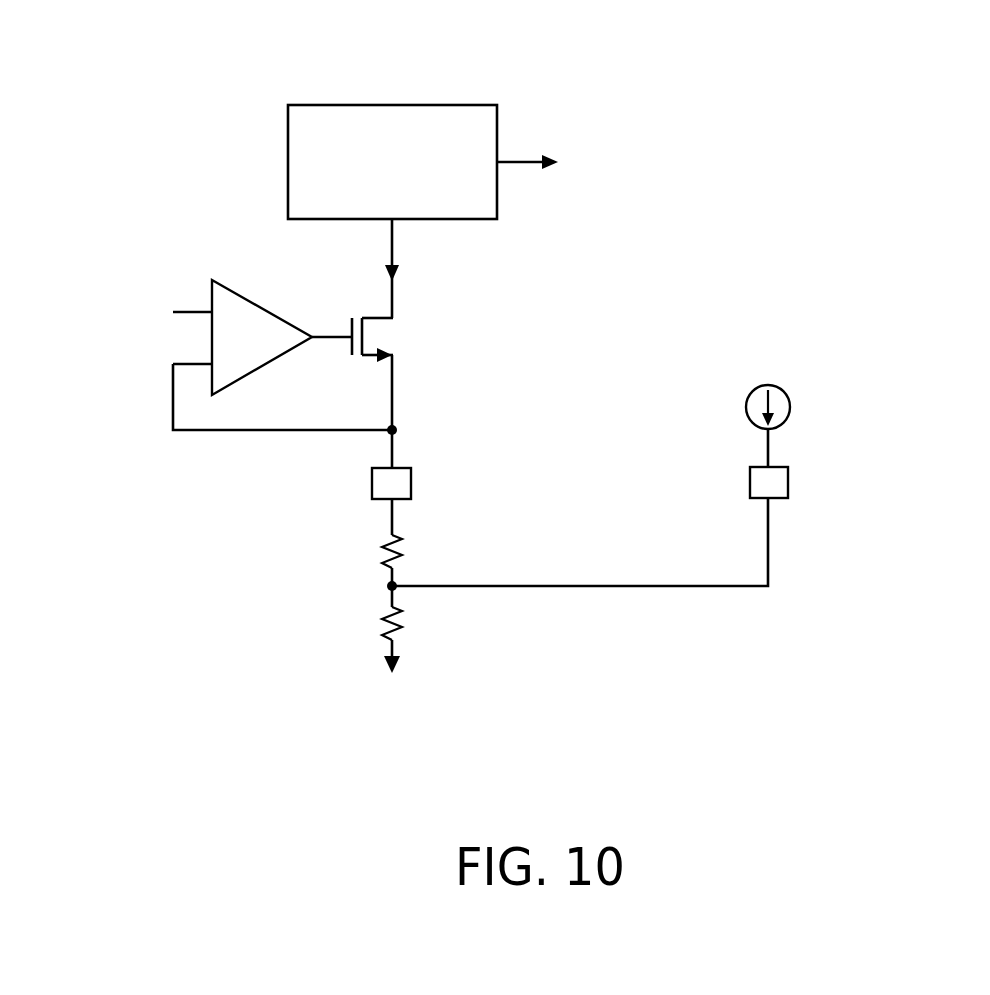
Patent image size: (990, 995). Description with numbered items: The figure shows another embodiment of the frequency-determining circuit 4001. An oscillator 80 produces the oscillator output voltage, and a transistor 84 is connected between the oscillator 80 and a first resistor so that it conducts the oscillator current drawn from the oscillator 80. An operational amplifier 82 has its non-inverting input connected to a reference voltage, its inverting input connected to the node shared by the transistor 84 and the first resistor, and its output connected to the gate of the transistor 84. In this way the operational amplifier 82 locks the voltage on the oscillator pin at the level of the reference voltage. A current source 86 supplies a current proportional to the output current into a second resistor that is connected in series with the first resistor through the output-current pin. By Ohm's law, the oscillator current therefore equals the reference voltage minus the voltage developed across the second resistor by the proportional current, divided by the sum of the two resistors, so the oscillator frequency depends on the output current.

The oscillator 80 is at (390, 105).
The operational amplifier 82 is at (262, 306).
The transistor 84 is at (406, 339).
The current source 86 is at (747, 405).
The frequency-determining circuit 4001 is at (900, 104).